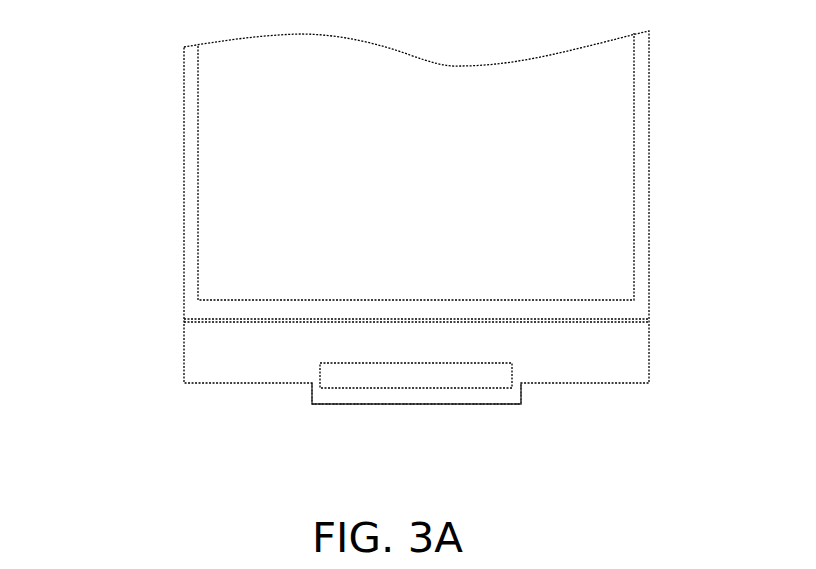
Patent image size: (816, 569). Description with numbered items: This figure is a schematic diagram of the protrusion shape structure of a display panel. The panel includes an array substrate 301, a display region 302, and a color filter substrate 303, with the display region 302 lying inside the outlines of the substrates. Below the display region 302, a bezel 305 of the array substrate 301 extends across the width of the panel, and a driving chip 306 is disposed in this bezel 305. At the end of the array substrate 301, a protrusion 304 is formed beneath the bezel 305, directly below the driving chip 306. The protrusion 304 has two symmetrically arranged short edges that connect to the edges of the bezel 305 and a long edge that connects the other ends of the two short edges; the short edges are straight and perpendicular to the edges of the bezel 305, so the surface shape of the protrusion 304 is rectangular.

The array substrate 301 is at (184, 93).
The display region 302 is at (603, 151).
The color filter substrate 303 is at (193, 204).
The protrusion 304 is at (347, 404).
The bezel 305 is at (202, 347).
The driving chip 306 is at (460, 388).